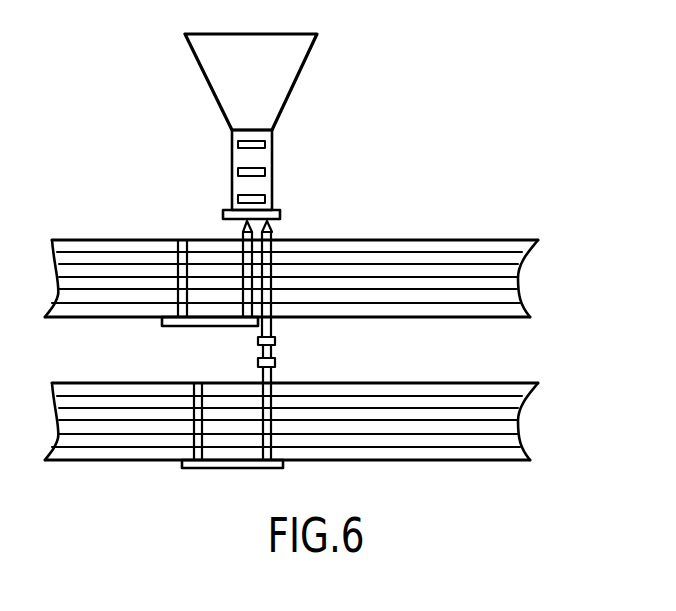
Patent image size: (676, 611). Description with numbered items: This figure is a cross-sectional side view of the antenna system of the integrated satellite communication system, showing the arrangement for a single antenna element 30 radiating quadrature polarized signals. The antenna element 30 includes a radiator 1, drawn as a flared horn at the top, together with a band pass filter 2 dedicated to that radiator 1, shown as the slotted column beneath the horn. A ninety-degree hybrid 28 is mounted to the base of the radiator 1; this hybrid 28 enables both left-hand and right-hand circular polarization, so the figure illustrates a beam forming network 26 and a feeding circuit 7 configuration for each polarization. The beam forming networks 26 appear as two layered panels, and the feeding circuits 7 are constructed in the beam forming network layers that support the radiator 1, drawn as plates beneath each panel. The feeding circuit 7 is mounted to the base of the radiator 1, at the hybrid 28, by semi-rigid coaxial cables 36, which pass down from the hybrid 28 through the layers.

The radiator 1 is at (290, 90).
The band pass filter 2 is at (272, 180).
The 90° hybrid 28 is at (223, 210).
The antenna element 30 is at (289, 126).
The beam forming network 26 is at (530, 250).
The semi-rigid coaxial cables 36 is at (252, 293).
The feeding circuit 7 is at (217, 326).